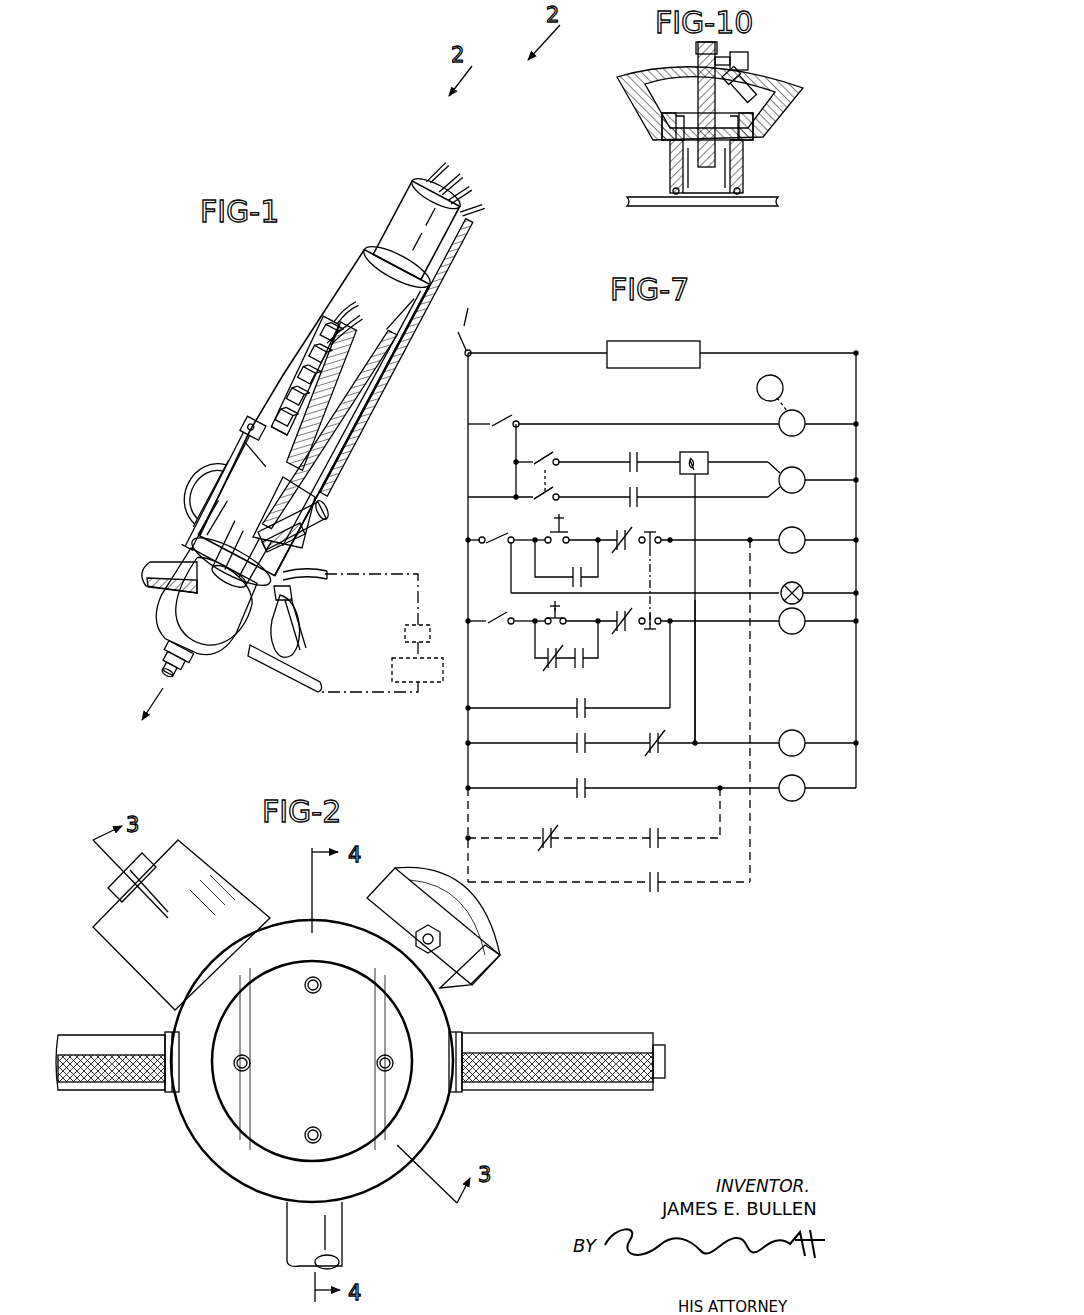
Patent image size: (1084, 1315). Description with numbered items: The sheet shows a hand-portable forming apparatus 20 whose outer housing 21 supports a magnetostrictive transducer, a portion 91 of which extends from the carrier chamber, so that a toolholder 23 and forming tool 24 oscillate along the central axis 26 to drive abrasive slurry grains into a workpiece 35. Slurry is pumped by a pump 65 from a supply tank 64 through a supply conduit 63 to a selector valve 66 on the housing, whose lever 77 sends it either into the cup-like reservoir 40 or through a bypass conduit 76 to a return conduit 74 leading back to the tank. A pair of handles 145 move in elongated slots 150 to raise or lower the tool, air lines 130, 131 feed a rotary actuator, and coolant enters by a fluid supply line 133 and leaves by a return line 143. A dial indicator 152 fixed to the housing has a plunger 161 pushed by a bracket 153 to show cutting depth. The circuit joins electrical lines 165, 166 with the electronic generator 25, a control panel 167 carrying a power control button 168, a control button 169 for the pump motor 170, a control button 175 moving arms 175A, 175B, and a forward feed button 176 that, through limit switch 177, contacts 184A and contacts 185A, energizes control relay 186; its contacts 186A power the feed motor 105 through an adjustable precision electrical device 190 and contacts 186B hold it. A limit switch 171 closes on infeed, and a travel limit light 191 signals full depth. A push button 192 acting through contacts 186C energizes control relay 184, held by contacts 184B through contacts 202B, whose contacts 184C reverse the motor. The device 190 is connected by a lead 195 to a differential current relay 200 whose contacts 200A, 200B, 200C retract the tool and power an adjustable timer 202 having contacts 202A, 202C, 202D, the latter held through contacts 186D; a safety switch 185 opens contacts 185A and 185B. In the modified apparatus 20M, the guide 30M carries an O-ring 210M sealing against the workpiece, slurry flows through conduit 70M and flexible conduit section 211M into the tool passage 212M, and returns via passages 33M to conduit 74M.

In FIG. 1, the hand-portable forming apparatus 20 is at (160, 360).
In FIG. 2, the hand-portable forming apparatus 20 is at (530, 978).
In FIG. 1, the outer housing 21 is at (348, 434).
In FIG. 2, the outer housing 21 is at (447, 1112).
In FIG. 1, the toolholder 23 is at (218, 574).
In FIG. 1, the forming tool 24 is at (162, 676).
In FIG. 1, the central axis 26 is at (152, 713).
In FIG. 1, the reservoir 40 is at (168, 628).
In FIG. 1, the supply conduit 63 is at (310, 572).
In FIG. 1, the supply tank 64 is at (420, 686).
In FIG. 1, the pump 65 is at (406, 624).
In FIG. 7, the pump 65 is at (760, 380).
In FIG. 1, the selector valve 66 is at (292, 594).
In FIG. 1, the return conduit 74 is at (270, 665).
In FIG. 2, the return conduit 74 is at (346, 1236).
In FIG. 1, the bypass conduit 76 is at (300, 632).
In FIG. 1, the lever 77 is at (296, 655).
In FIG. 1, the outer portion of transducer 91 is at (222, 552).
In FIG. 7, the feed motor 105 is at (802, 470).
In FIG. 1, the air line 130 is at (440, 168).
In FIG. 2, the air line 130 is at (376, 1063).
In FIG. 1, the air line 131 is at (482, 206).
In FIG. 2, the air line 131 is at (251, 1063).
In FIG. 1, the fluid supply line 133 is at (470, 190).
In FIG. 2, the fluid supply line 133 is at (310, 1126).
In FIG. 1, the return line 143 is at (455, 180).
In FIG. 2, the return line 143 is at (313, 994).
In FIG. 1, the handles 145 is at (150, 578).
In FIG. 2, the handles 145 is at (96, 1045).
In FIG. 1, the elongated slots 150 is at (305, 478).
In FIG. 1, the dial indicator 152 is at (210, 482).
In FIG. 2, the dial indicator 152 is at (470, 920).
In FIG. 1, the bracket 153 is at (243, 424).
In FIG. 1, the plunger 161 is at (240, 455).
In FIG. 7, the electrical line 165 is at (466, 760).
In FIG. 7, the electrical line 166 is at (855, 790).
In FIG. 1, the control panel 167 is at (322, 386).
In FIG. 2, the control panel 167 is at (200, 862).
In FIG. 1, the control button 168 is at (298, 388).
In FIG. 7, the control button 168 is at (466, 348).
In FIG. 1, the control button 169 is at (284, 408).
In FIG. 7, the control button 169 is at (500, 420).
In FIG. 7, the motor 170 is at (778, 418).
In FIG. 7, the limit switch 171 is at (500, 614).
In FIG. 1, the control button 175 is at (300, 372).
In FIG. 7, the control button 175 is at (542, 450).
In FIG. 7, the arm 175A is at (560, 455).
In FIG. 7, the arm 175B is at (552, 492).
In FIG. 1, the forward feed button 176 is at (312, 355).
In FIG. 7, the forward feed button 176 is at (553, 530).
In FIG. 7, the limit switch 177 is at (484, 546).
In FIG. 7, the control relay 184 is at (797, 634).
In FIG. 7, the contacts 184A is at (612, 532).
In FIG. 7, the contacts 184B is at (588, 662).
In FIG. 7, the contacts 184C is at (640, 494).
In FIG. 7, the safety switch 185 is at (656, 580).
In FIG. 7, the contacts 185A is at (660, 550).
In FIG. 7, the contacts 185B is at (660, 630).
In FIG. 7, the control relay 186 is at (797, 528).
In FIG. 7, the contacts 186A is at (640, 456).
In FIG. 7, the contacts 186B is at (508, 580).
In FIG. 7, the contacts 186C is at (586, 580).
In FIG. 7, the contacts 186D is at (540, 834).
In FIG. 7, the adjustable precision electrical device 190 is at (708, 454).
In FIG. 1, the travel limit light 191 is at (331, 322).
In FIG. 7, the travel limit light 191 is at (796, 584).
In FIG. 2, the travel limit light 191 is at (112, 884).
In FIG. 1, the push button 192 is at (322, 340).
In FIG. 7, the push button 192 is at (540, 624).
In FIG. 7, the lead 195 is at (697, 660).
In FIG. 7, the differential current relay 200 is at (788, 732).
In FIG. 7, the contacts 200A is at (588, 706).
In FIG. 7, the contacts 200B is at (590, 752).
In FIG. 7, the contacts 200C is at (590, 798).
In FIG. 7, the adjustable timer 202 is at (791, 802).
In FIG. 7, the contacts 202A is at (662, 752).
In FIG. 7, the contacts 202B is at (545, 666).
In FIG. 7, the contacts 202C is at (662, 848).
In FIG. 7, the contacts 202D is at (662, 892).
In FIG. 7, the electronic generator 25 is at (618, 340).
In FIG. 10, the modified apparatus 20M is at (612, 122).
In FIG. 10, the guide 30M is at (752, 150).
In FIG. 10, the passages 33M is at (680, 138).
In FIG. 10, the workpiece 35 is at (762, 208).
In FIG. 10, the conduit 70M is at (740, 52).
In FIG. 10, the conduit 74M is at (762, 90).
In FIG. 10, the O-ring 210M is at (675, 196).
In FIG. 10, the flexible conduit section 211M is at (748, 60).
In FIG. 10, the passage 212M is at (700, 76).